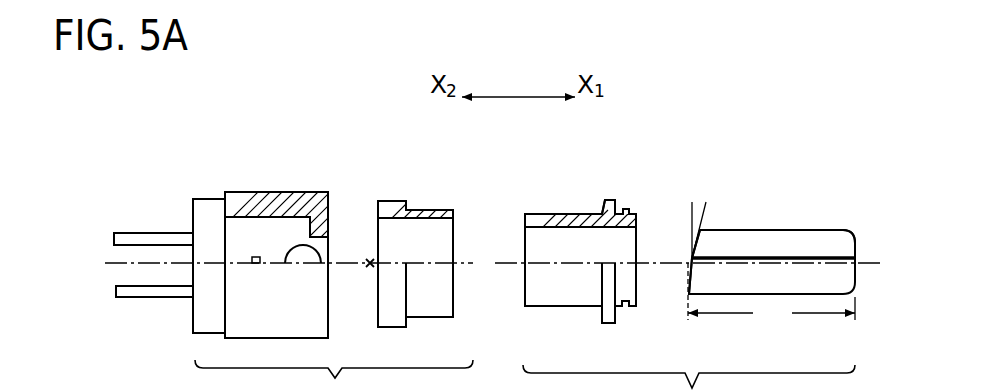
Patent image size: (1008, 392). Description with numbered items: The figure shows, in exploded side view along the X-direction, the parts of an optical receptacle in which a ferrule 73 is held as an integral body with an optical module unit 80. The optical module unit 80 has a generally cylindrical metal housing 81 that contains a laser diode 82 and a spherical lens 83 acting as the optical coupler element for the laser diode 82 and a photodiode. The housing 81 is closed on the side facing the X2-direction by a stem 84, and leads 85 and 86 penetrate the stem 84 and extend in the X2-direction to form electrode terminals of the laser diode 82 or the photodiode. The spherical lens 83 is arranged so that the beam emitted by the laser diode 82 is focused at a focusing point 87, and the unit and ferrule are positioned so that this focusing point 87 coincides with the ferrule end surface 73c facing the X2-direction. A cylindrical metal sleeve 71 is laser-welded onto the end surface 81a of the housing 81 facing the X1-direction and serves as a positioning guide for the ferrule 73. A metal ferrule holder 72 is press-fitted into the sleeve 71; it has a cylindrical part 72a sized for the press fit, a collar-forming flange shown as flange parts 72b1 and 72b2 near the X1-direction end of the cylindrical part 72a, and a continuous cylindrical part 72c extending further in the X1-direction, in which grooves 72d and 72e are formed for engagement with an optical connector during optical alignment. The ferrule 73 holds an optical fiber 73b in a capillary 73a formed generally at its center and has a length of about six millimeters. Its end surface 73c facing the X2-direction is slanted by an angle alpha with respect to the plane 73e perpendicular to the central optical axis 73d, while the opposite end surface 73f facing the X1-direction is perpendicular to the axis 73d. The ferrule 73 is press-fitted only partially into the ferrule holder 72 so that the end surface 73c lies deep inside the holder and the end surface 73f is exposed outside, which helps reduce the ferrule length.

The optical module unit 80 is at (270, 135).
The metal housing 81 is at (290, 200).
The end surface of the housing 81a is at (330, 207).
The laser diode 82 is at (255, 257).
The spherical lens 83 is at (299, 258).
The stem 84 is at (200, 212).
The lead 85 is at (130, 233).
The lead 86 is at (132, 297).
The focusing point 87 is at (370, 266).
The sleeve 71 is at (417, 190).
The ferrule holder 72 is at (579, 145).
The cylindrical part 72a is at (566, 201).
The flange part 72b1 is at (601, 203).
The flange part 72b2 is at (606, 318).
The continuous cylindrical part 72c is at (626, 208).
The groove 72d is at (637, 213).
The groove 72e is at (626, 308).
The ferrule 73 is at (765, 147).
The capillary 73a is at (762, 237).
The optical fiber 73b is at (805, 257).
The end surface of the ferrule 73c is at (690, 283).
The central optical axis 73d is at (865, 263).
The plane perpendicular to the central optical axis 73e is at (690, 212).
The end surface of the ferrule 73f is at (855, 248).